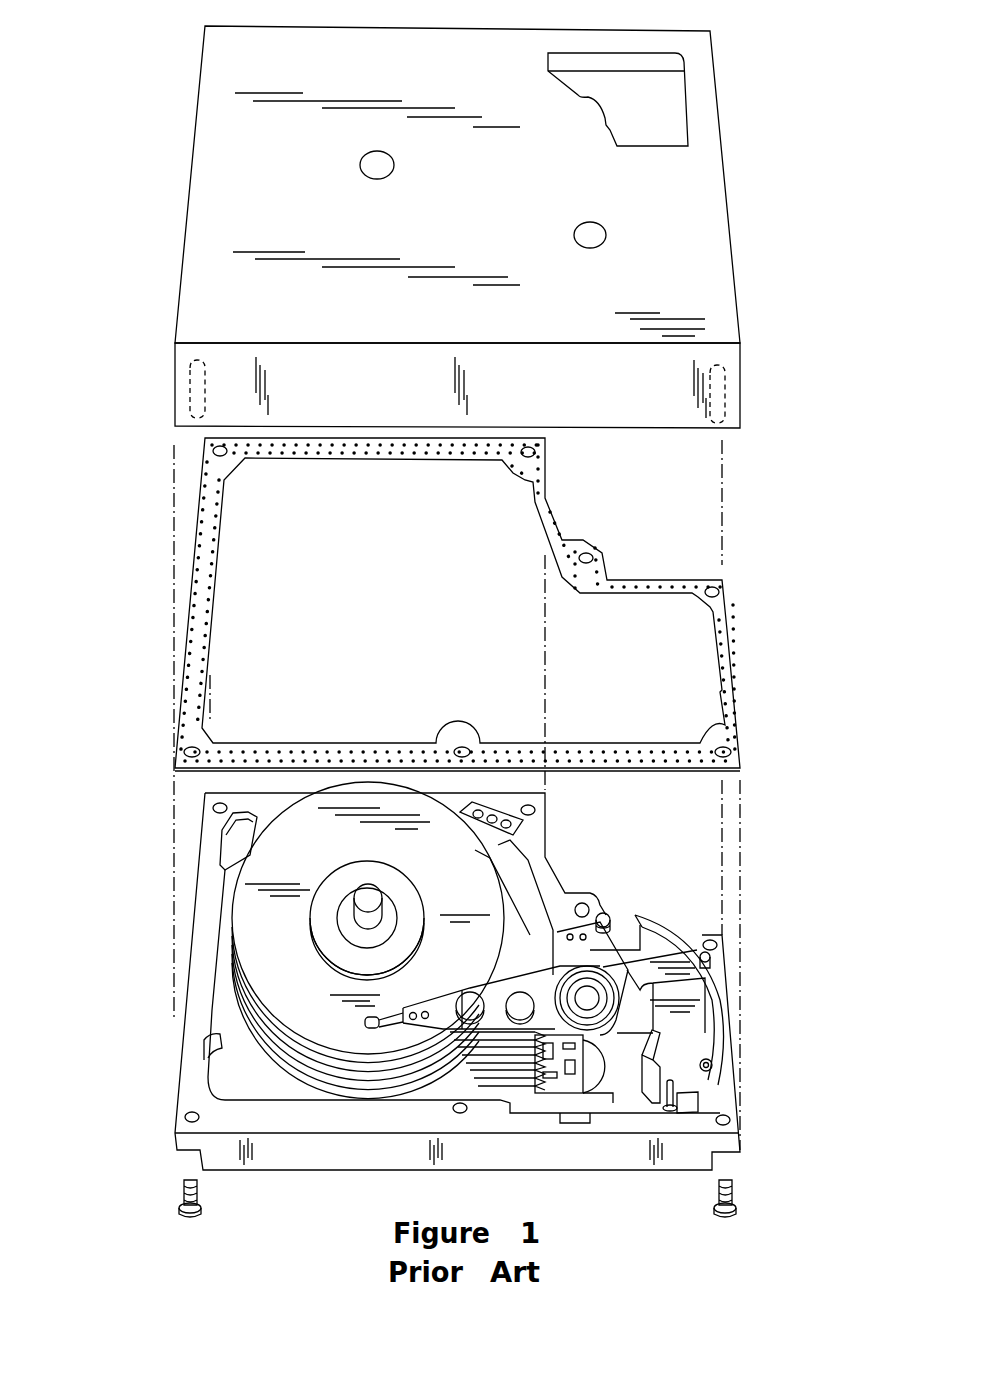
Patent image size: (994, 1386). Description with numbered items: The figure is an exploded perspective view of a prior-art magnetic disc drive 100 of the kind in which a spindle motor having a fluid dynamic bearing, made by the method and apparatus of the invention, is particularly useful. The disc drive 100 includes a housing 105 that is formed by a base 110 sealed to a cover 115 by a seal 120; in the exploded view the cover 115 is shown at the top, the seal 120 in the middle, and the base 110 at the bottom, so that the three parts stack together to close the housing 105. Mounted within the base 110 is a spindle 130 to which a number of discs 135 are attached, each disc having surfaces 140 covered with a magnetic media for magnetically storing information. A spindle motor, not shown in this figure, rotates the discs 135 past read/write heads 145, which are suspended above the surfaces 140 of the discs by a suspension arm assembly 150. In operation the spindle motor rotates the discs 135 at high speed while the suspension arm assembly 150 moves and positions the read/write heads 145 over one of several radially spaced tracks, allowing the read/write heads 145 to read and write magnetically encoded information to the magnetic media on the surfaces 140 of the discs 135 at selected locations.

The disc drive 100 is at (152, 167).
The housing 105 is at (744, 92).
The base 110 is at (735, 1053).
The cover 115 is at (730, 190).
The seal 120 is at (735, 660).
The spindle 130 is at (343, 922).
The discs 135 is at (232, 893).
The surfaces 140 is at (312, 980).
The read/write heads 145 is at (370, 1030).
The suspension arm assembly 150 is at (500, 1080).